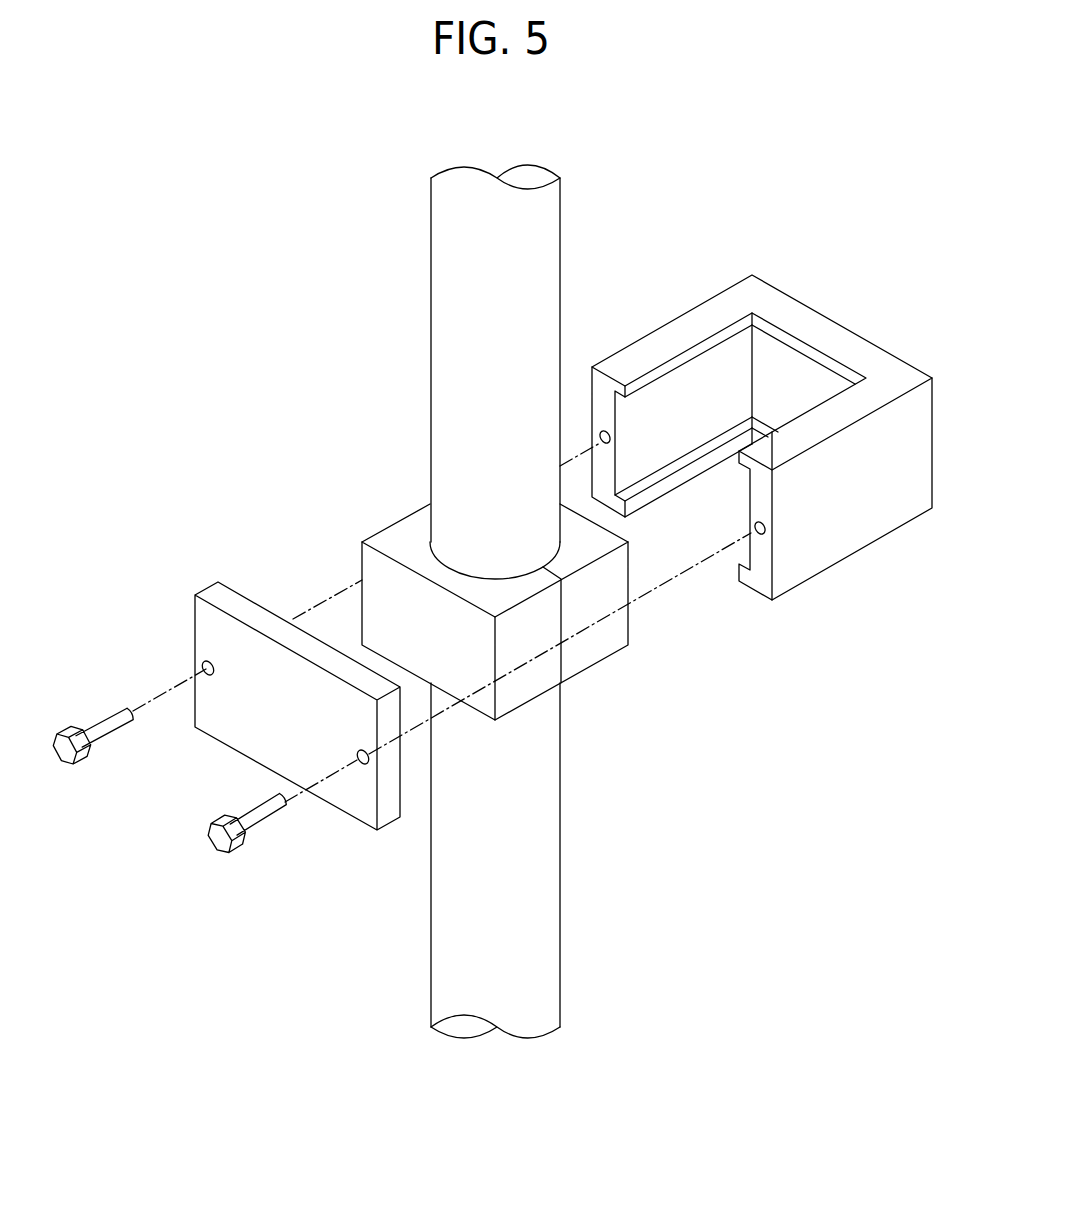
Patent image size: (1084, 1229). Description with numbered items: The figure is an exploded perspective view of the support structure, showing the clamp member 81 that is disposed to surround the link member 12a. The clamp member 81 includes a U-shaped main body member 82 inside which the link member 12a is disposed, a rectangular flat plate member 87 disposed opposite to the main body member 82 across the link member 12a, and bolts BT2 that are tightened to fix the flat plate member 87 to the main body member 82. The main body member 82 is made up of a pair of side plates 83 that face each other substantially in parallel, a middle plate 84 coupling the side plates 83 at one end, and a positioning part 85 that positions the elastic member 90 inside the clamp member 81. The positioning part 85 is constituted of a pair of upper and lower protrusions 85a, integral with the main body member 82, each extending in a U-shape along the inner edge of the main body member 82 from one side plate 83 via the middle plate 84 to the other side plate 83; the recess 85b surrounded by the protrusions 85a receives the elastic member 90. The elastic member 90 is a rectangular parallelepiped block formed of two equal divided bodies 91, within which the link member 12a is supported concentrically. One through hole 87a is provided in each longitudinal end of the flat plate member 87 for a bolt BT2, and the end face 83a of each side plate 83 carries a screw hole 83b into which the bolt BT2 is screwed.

The link member 12a is at (447, 258).
The clamp member 81 is at (759, 433).
The main body member 82 is at (759, 461).
The side plate 83 is at (759, 496).
The end face 83a is at (605, 405).
The screw hole 83b is at (606, 445).
The middle plate 84 is at (823, 388).
The positioning part 85 is at (739, 446).
The protrusion 85a is at (693, 460).
The recess 85b is at (730, 367).
The flat plate member 87 is at (247, 749).
The through hole 87a is at (205, 668).
The elastic member 90 is at (479, 571).
The divided body 91 is at (372, 567).
The bolt BT2 is at (108, 740).